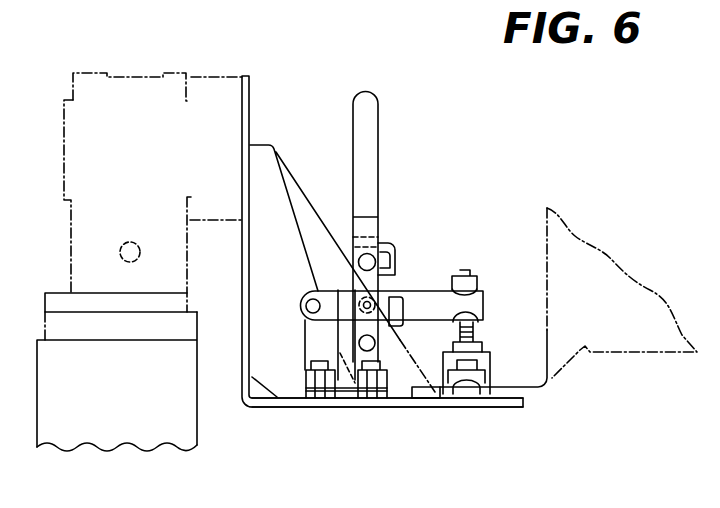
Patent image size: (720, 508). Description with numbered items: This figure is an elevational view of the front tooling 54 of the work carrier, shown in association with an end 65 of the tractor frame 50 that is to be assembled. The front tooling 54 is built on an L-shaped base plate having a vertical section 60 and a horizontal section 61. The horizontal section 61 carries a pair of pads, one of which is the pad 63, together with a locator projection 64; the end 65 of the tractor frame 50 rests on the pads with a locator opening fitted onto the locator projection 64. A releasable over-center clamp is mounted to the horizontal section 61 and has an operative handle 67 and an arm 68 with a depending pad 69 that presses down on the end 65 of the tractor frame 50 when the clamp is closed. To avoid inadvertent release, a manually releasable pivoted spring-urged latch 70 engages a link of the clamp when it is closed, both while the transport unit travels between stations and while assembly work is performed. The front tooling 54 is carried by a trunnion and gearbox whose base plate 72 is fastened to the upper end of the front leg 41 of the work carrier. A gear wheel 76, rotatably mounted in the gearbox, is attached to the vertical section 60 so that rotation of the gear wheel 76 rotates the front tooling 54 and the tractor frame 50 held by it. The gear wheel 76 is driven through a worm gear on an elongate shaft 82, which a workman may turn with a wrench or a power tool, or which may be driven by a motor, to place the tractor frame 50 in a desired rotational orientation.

The front leg 41 is at (113, 443).
The tractor frame 50 is at (633, 353).
The front tooling 54 is at (507, 167).
The vertical section 60 is at (242, 327).
The horizontal section 61 is at (397, 408).
The pad 63 is at (527, 393).
The locator projection 64 is at (470, 388).
The end of the tractor frame 65 is at (508, 385).
The operative handle 67 is at (380, 135).
The arm 68 is at (426, 291).
The depending pad 69 is at (442, 365).
The latch 70 is at (342, 332).
The base plate 72 is at (58, 293).
The gear wheel 76 is at (227, 77).
The elongate shaft 82 is at (122, 243).